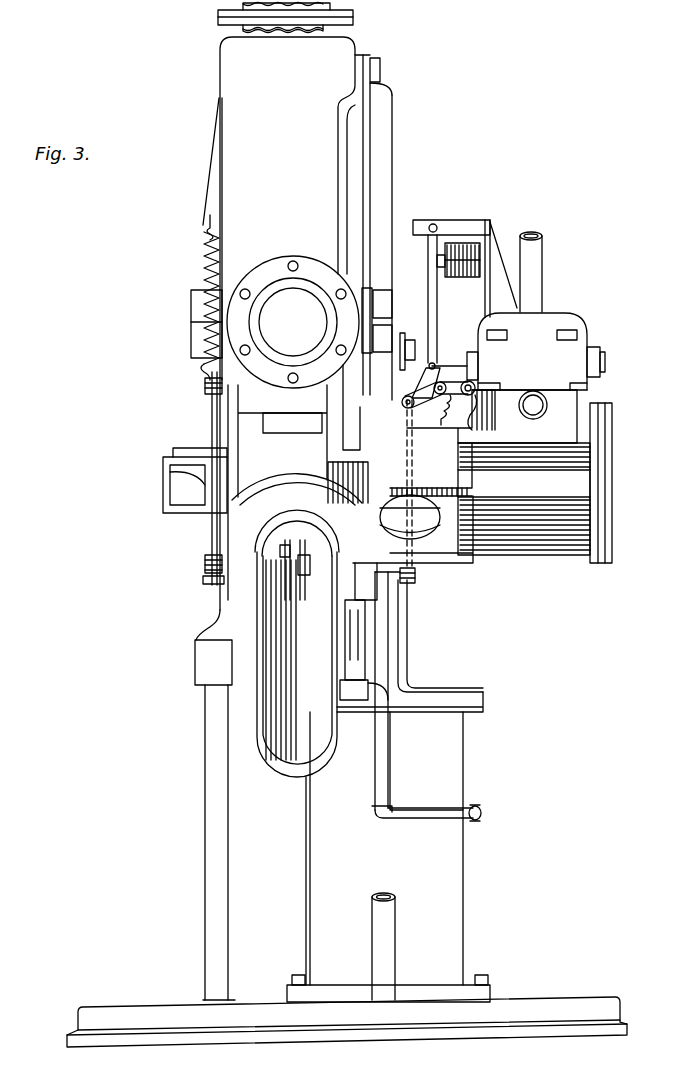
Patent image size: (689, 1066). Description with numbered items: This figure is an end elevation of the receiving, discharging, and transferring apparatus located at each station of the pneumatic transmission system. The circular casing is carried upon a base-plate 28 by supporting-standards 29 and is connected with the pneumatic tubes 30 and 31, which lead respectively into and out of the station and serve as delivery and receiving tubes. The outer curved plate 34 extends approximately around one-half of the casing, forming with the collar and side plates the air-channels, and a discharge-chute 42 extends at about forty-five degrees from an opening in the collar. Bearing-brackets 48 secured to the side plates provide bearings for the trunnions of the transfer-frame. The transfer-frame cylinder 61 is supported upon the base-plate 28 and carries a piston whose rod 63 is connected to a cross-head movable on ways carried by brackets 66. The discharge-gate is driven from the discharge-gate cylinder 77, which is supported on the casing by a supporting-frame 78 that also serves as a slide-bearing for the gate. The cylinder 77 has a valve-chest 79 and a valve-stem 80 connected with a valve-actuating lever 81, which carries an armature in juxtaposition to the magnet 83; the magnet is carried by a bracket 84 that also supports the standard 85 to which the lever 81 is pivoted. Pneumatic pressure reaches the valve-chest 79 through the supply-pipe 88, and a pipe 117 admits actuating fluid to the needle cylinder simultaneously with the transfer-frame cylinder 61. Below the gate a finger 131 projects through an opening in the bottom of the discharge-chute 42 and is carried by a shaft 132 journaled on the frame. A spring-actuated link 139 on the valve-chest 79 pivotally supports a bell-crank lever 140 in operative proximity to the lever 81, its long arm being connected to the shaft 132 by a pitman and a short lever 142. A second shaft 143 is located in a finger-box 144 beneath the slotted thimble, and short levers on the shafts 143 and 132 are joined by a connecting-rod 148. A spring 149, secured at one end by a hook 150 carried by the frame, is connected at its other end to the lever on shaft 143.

The base-plate 28 is at (530, 1006).
The supporting-standards 29 is at (205, 905).
The pneumatic tube 30 is at (262, 12).
The pneumatic tube 31 is at (293, 322).
The outer curved plate 34 is at (281, 361).
The discharge-chute 42 is at (297, 768).
The bearing-brackets 48 is at (212, 150).
The transfer-frame cylinder 61 is at (388, 857).
The piston rod 63 is at (382, 645).
The brackets 66 is at (400, 664).
The discharge-gate cylinder 77 is at (612, 493).
The supporting-frame 78 is at (465, 480).
The valve-chest 79 is at (536, 351).
The valve-stem 80 is at (434, 366).
The valve-actuating lever 81 is at (428, 297).
The magnet 83 is at (458, 276).
The bracket 84 is at (490, 226).
The standard 85 is at (455, 220).
The supply-pipe 88 is at (542, 280).
The pipe 117 is at (375, 792).
The finger 131 is at (292, 577).
The shaft 132 is at (203, 578).
The spring-actuated link 139 is at (455, 410).
The bell-crank lever 140 is at (430, 392).
The short lever 142 is at (416, 580).
The shaft 143 is at (210, 404).
The finger-box 144 is at (292, 413).
The connecting-rod 148 is at (208, 540).
The spring 149 is at (200, 280).
The hook 150 is at (208, 218).